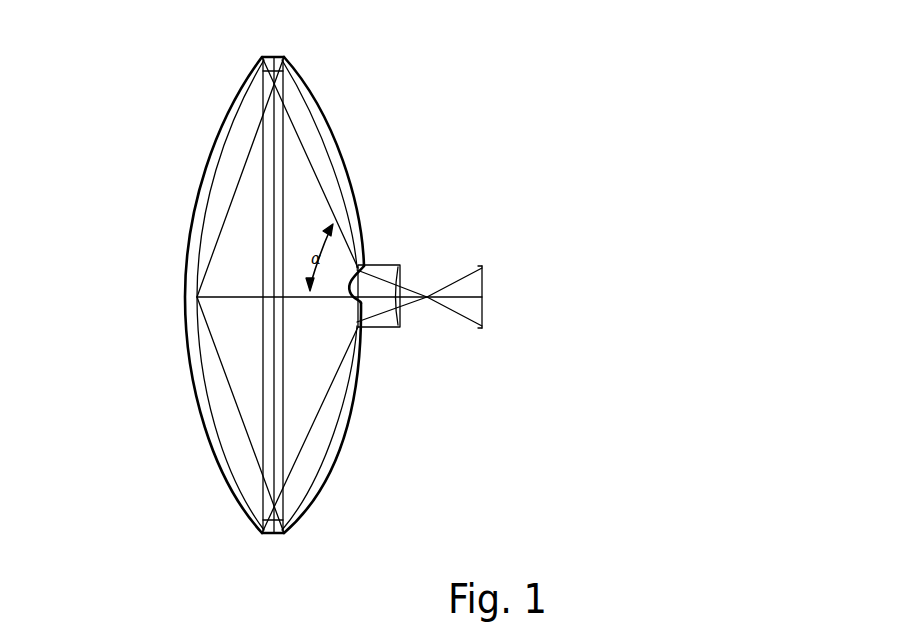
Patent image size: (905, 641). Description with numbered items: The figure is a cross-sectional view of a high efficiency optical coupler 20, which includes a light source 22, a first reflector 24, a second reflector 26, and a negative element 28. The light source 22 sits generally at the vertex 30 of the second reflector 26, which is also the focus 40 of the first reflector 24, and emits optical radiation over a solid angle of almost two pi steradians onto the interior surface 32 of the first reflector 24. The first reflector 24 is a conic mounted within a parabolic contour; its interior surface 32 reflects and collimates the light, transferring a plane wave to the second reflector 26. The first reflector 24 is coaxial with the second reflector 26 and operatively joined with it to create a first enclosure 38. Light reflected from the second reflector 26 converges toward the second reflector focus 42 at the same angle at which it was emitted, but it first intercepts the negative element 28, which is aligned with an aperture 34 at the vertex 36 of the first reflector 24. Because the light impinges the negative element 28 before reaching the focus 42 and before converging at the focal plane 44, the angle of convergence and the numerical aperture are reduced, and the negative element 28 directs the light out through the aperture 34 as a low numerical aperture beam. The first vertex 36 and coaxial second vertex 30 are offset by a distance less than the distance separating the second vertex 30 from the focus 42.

The high efficiency optical coupler 20 is at (435, 74).
The light source 22 is at (196, 297).
The first reflector 24 is at (334, 136).
The second reflector 26 is at (205, 430).
The negative element 28 is at (382, 328).
The vertex of the second reflector 30 is at (196, 296).
The interior surface of the first reflector 32 is at (336, 426).
The aperture 34 is at (358, 266).
The vertex of the first reflector 36 is at (367, 267).
The first enclosure 38 is at (300, 470).
The focus of the first reflector 40 is at (196, 298).
The focus of the second reflector 42 is at (375, 297).
The focal plane 44 is at (427, 296).